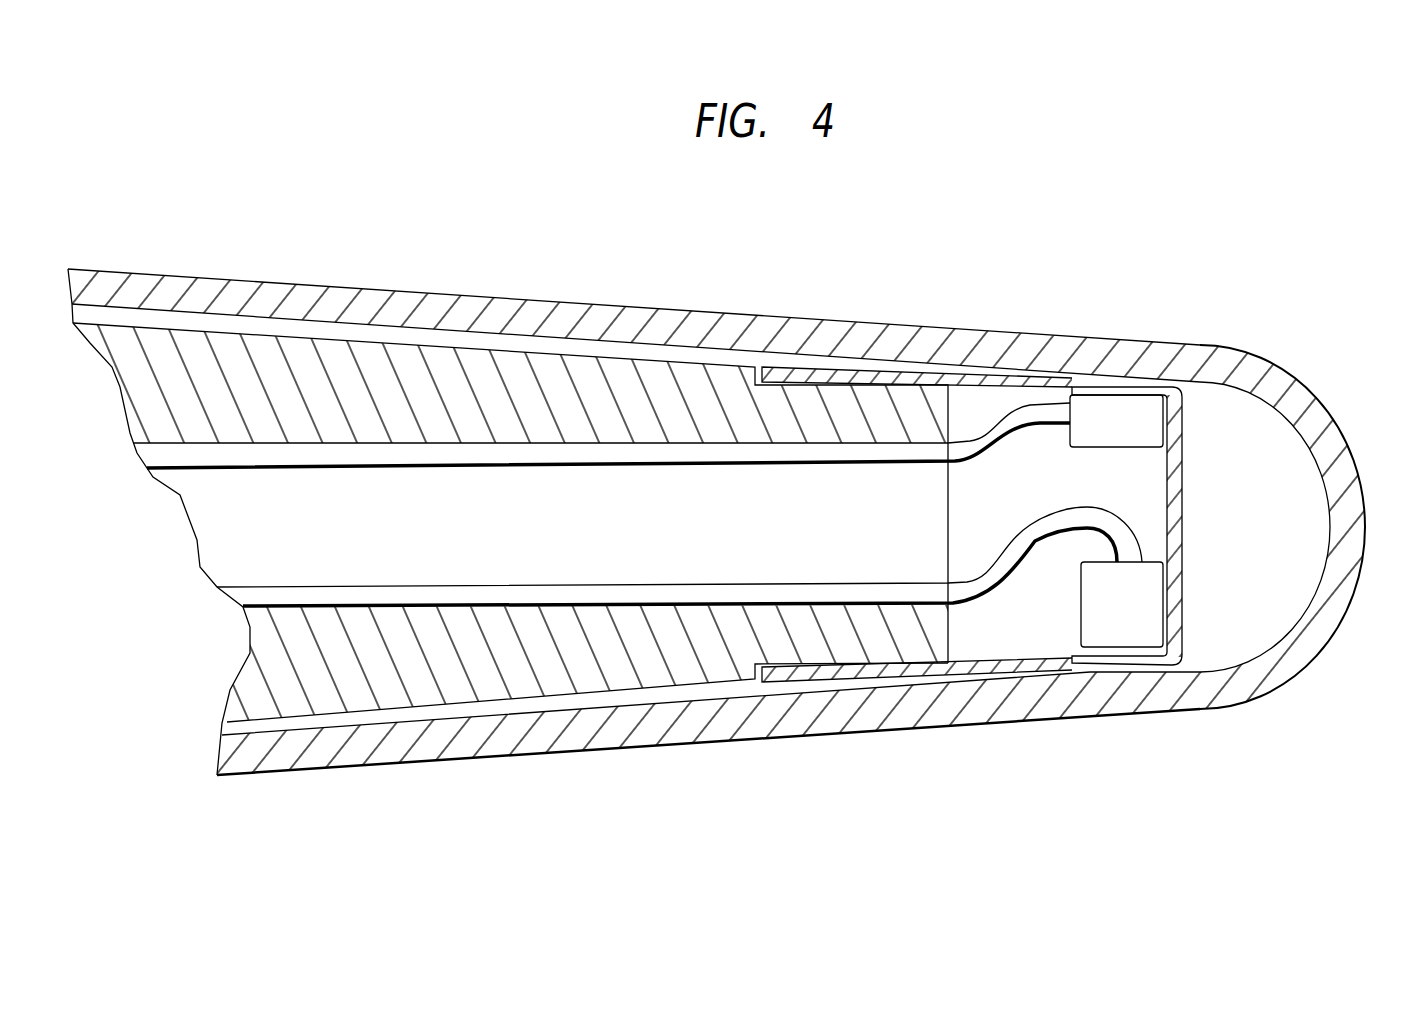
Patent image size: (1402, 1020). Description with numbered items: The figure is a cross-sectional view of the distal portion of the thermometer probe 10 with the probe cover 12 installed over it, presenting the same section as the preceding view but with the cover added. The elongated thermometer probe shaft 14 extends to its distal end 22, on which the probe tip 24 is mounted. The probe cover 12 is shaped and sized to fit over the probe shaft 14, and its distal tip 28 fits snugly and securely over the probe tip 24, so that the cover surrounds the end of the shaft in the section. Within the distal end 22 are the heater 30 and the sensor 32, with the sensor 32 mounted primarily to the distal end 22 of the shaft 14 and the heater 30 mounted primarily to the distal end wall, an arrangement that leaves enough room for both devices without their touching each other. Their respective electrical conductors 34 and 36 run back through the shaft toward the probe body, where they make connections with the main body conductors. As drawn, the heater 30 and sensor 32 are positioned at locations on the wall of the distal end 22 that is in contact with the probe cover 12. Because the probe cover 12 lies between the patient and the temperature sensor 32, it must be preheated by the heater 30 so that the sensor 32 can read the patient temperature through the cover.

The thermometer probe 10 is at (257, 688).
The probe cover 12 is at (318, 300).
The thermometer probe shaft 14 is at (610, 695).
The distal end 22 is at (823, 673).
The probe tip 24 is at (1207, 547).
The distal tip 28 is at (1347, 448).
The heater 30 is at (1143, 417).
The sensor 32 is at (1100, 633).
The electrical conductor 34 is at (1010, 425).
The electrical conductor 36 is at (997, 583).